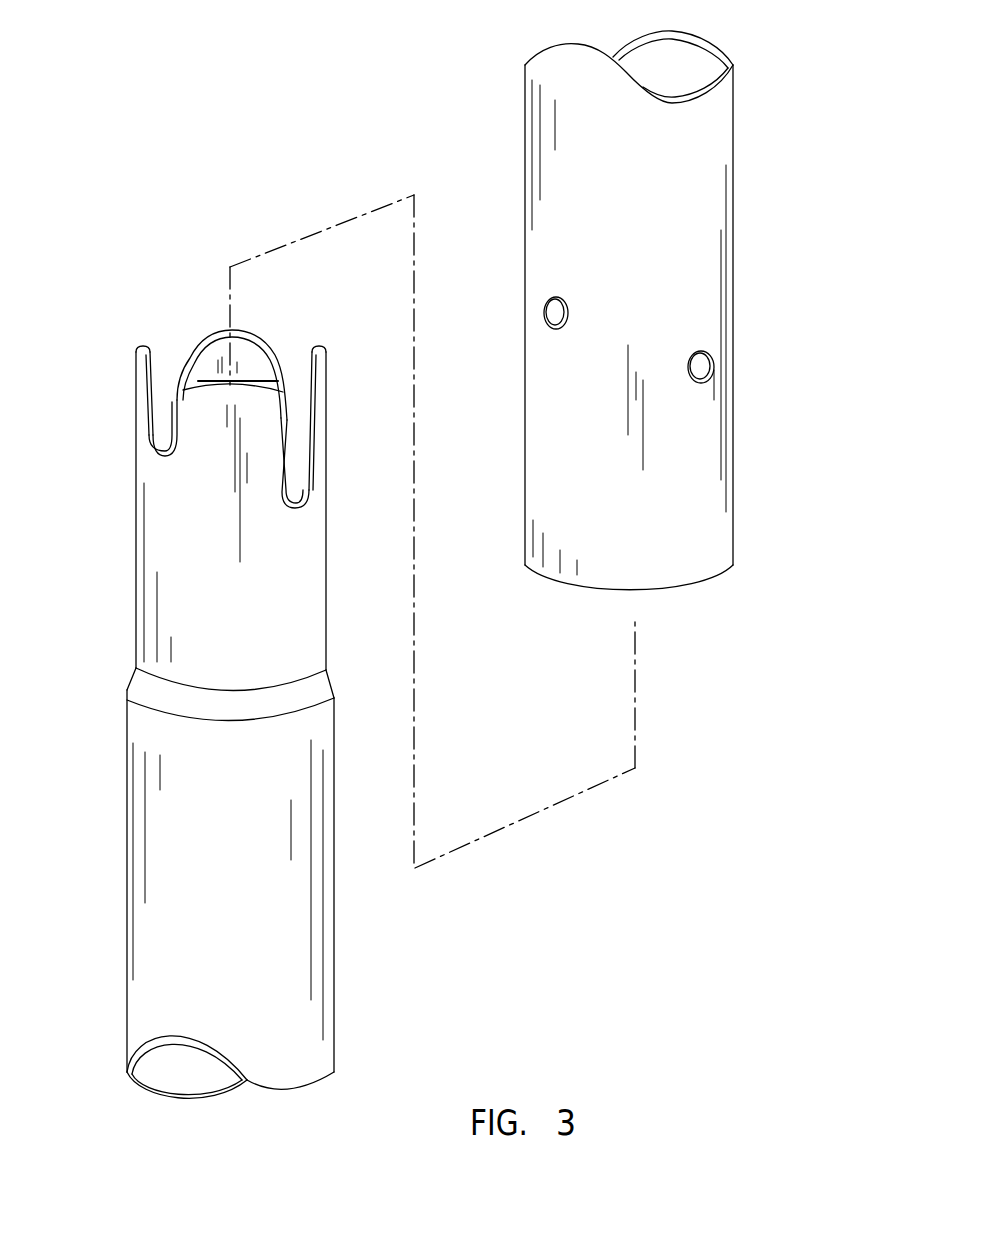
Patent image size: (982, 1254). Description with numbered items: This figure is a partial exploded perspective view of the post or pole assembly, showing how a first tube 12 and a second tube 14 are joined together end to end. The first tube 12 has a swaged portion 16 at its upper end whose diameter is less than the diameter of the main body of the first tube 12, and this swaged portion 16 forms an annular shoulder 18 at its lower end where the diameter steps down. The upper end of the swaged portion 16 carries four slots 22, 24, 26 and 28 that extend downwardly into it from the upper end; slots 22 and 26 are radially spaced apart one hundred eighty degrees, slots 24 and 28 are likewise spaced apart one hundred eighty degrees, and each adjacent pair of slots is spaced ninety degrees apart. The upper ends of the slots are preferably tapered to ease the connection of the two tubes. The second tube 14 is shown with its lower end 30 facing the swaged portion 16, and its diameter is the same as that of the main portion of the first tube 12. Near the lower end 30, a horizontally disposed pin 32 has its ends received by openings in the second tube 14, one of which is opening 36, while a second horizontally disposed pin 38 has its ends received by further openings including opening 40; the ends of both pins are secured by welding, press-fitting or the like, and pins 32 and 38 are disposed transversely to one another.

The first tube 12 is at (122, 933).
The second tube 14 is at (750, 262).
The swaged portion 16 is at (190, 575).
The annular shoulder 18 is at (150, 698).
The slot 22 is at (167, 360).
The slot 24 is at (290, 358).
The slot 26 is at (297, 476).
The slot 28 is at (168, 428).
The lower end 30 is at (686, 588).
The pin 32 is at (706, 368).
The opening 36 is at (703, 350).
The pin 38 is at (550, 312).
The opening 40 is at (567, 320).